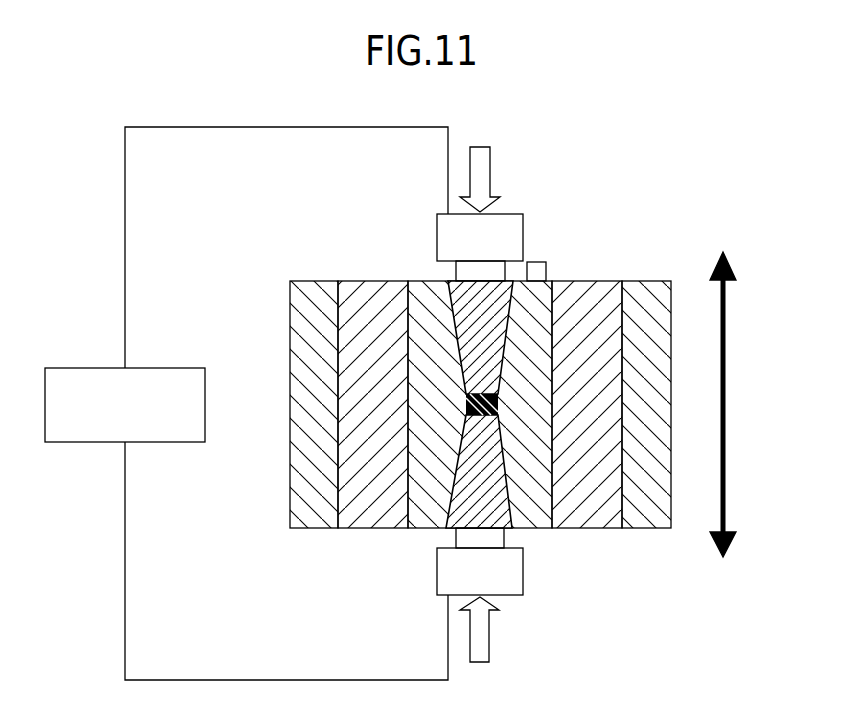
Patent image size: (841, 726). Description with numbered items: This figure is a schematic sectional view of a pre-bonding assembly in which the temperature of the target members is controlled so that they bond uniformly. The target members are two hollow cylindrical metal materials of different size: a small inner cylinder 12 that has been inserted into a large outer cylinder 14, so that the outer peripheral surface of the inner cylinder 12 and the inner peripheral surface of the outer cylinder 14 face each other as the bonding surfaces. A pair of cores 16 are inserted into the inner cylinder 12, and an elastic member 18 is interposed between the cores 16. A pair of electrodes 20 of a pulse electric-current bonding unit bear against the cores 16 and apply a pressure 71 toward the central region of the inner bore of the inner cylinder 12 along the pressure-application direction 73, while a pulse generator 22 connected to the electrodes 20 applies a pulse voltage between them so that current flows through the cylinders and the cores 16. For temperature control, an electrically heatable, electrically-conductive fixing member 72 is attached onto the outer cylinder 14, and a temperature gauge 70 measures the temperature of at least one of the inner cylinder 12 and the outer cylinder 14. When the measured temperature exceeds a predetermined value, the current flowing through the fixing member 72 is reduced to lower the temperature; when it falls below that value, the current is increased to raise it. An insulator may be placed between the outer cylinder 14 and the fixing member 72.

The inner cylinder 12 is at (422, 528).
The outer cylinder 14 is at (373, 283).
The core 16 is at (497, 488).
The elastic member 18 is at (498, 396).
The electrode 20 is at (437, 240).
The pulse generator 22 is at (72, 368).
The temperature gauge 70 is at (546, 270).
The pressure 71 is at (493, 180).
The electrically-conductive fixing member 72 is at (300, 318).
The pressure-application direction 73 is at (726, 410).